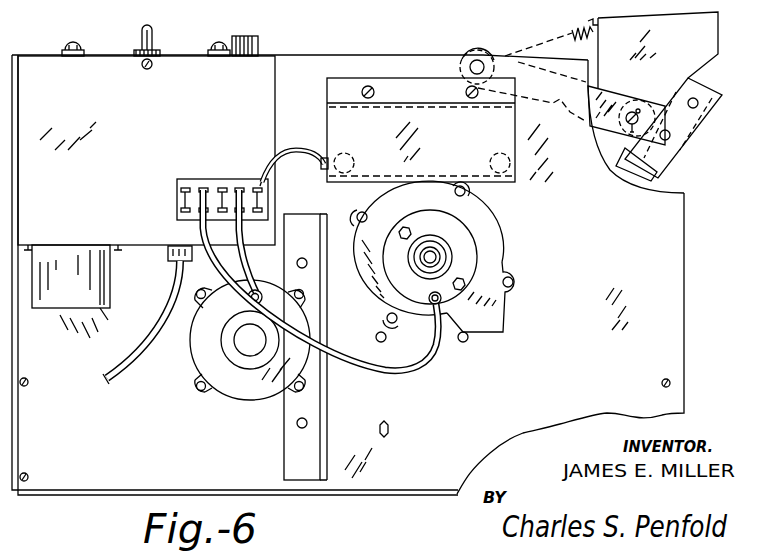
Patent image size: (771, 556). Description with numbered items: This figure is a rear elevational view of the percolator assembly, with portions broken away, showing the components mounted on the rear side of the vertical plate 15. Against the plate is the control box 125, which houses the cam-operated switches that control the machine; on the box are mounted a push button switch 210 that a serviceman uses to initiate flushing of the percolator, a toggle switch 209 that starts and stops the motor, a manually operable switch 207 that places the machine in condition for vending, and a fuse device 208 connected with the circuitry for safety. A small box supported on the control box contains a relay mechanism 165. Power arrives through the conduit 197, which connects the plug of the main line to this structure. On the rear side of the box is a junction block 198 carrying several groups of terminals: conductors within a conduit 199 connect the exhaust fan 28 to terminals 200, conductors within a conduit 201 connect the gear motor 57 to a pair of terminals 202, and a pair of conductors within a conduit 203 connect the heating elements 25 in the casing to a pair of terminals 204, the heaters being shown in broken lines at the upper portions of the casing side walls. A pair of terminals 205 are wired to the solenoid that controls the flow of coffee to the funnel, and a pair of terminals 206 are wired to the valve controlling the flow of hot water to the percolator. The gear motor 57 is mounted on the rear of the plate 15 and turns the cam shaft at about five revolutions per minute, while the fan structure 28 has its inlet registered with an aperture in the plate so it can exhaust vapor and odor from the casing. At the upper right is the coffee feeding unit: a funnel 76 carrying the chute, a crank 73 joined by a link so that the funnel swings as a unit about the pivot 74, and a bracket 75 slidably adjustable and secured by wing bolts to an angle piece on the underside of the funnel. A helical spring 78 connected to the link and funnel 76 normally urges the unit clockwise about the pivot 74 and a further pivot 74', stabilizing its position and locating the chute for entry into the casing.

The vertical plate 15 is at (684, 228).
The control box 125 is at (46, 68).
The push button switch 210 is at (78, 45).
The toggle switch 209 is at (141, 40).
The manually operable switch 207 is at (216, 46).
The fuse device 208 is at (250, 36).
The junction block 198 is at (177, 212).
The terminals 205 is at (181, 196).
The terminals 200 is at (208, 186).
The terminals 206 is at (224, 188).
The terminals 202 is at (243, 188).
The terminals 204 is at (268, 196).
The conduit 203 is at (294, 148).
The relay mechanism 165 is at (100, 291).
The conduit 197 is at (116, 384).
The gear motor 57 is at (200, 359).
The fan structure 28 is at (470, 255).
The conduit 201 is at (249, 265).
The conduit 199 is at (352, 364).
The heating elements 25 is at (350, 156).
The pivot 74 is at (469, 59).
The helical spring 78 is at (548, 42).
The funnel 76 is at (708, 40).
The crank 73 is at (617, 96).
The pivot 74' is at (645, 111).
The bracket 75 is at (698, 132).